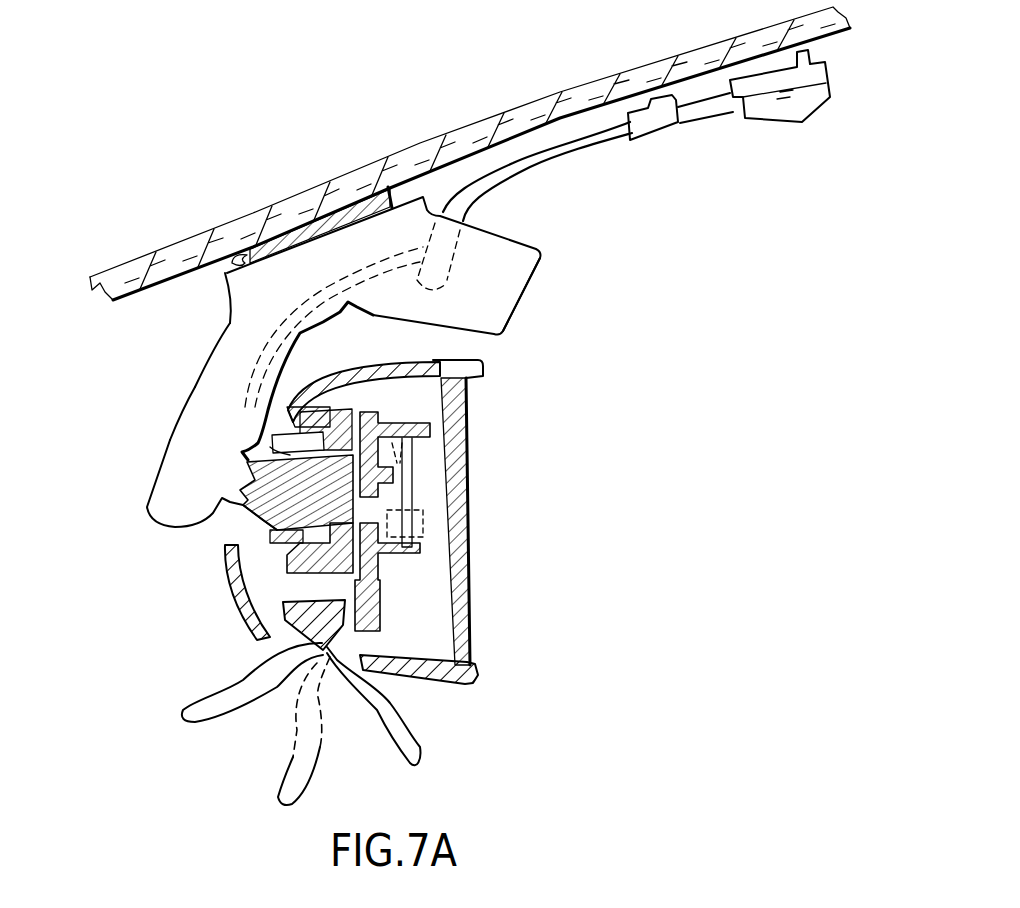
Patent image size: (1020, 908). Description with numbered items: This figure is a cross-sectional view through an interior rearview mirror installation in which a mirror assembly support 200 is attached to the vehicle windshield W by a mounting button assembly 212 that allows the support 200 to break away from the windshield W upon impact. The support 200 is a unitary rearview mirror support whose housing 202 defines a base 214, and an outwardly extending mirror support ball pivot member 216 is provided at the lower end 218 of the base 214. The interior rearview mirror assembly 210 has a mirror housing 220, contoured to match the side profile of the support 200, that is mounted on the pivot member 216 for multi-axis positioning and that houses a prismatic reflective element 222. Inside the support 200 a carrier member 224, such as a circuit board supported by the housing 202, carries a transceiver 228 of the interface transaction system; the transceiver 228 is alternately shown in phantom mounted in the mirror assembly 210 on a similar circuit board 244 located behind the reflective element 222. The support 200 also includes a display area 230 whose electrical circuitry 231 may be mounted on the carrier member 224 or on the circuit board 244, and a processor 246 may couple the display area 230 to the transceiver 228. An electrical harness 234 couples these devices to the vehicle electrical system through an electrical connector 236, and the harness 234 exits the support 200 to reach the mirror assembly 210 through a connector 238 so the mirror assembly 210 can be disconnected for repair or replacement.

The windshield W is at (470, 128).
The mirror assembly support 200 is at (547, 238).
The housing 202 is at (187, 432).
The interior rearview mirror assembly 210 is at (483, 377).
The mounting button assembly 212 is at (347, 207).
The base 214 is at (193, 380).
The mirror support ball pivot member 216 is at (273, 503).
The lower end 218 is at (153, 518).
The mirror housing 220 is at (437, 690).
The prismatic reflective element 222 is at (470, 500).
The carrier member 224 is at (447, 267).
The transceiver 228 is at (437, 305).
The display area 230 is at (520, 302).
The electrical circuitry 231 is at (463, 220).
The electrical harness 234 is at (600, 142).
The electrical connector 236 is at (707, 127).
The connector 238 is at (270, 447).
The circuit board 244 is at (407, 465).
The processor 246 is at (480, 340).